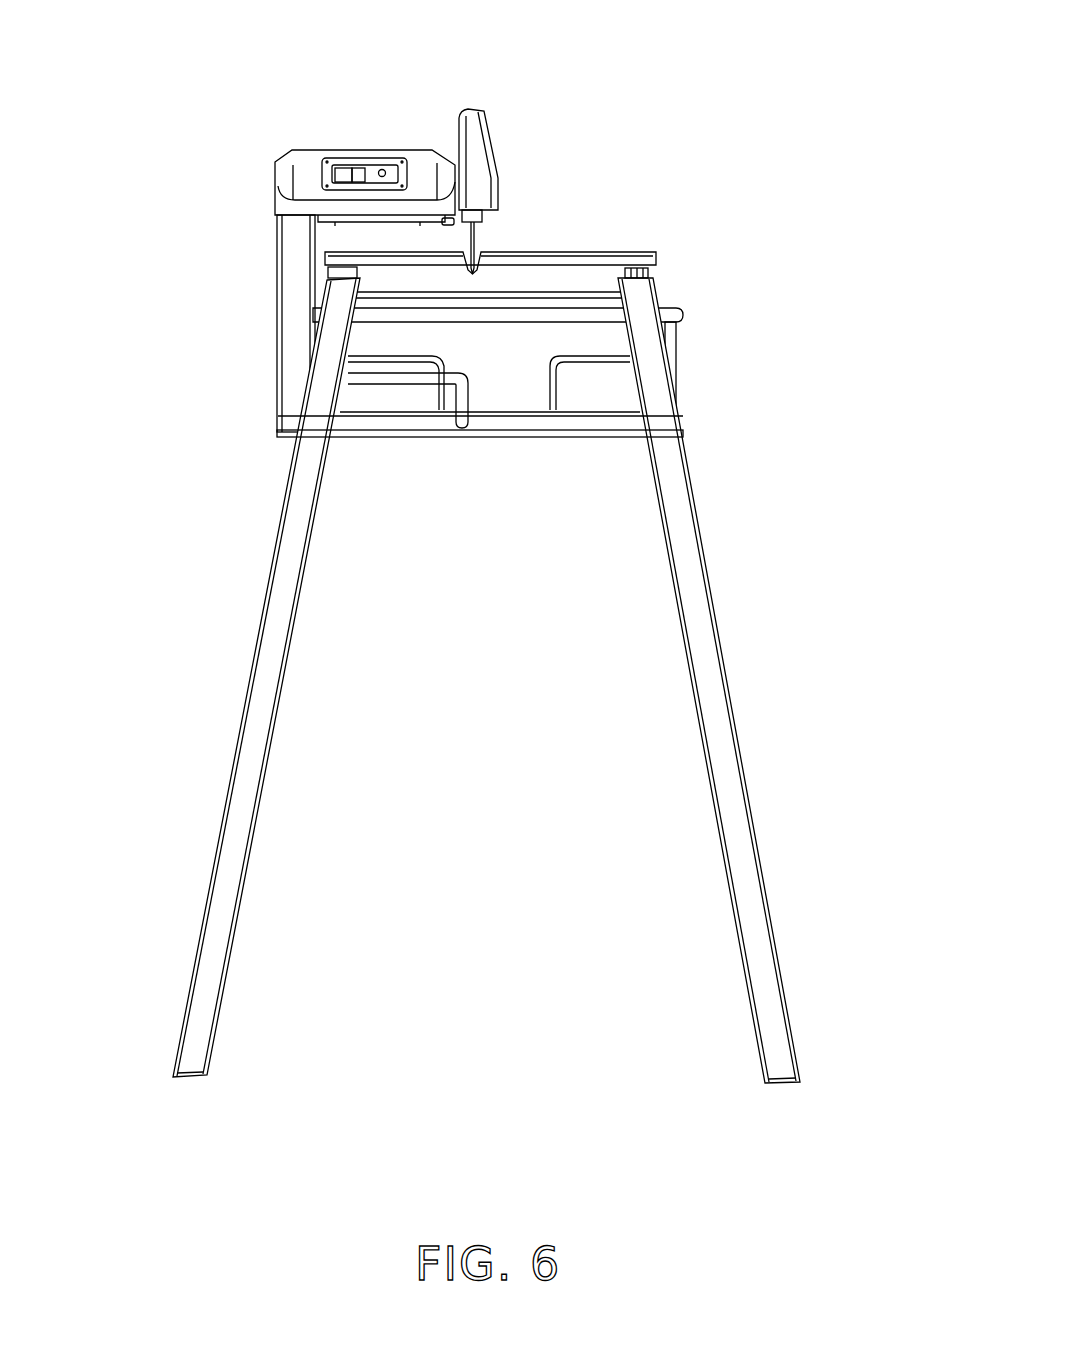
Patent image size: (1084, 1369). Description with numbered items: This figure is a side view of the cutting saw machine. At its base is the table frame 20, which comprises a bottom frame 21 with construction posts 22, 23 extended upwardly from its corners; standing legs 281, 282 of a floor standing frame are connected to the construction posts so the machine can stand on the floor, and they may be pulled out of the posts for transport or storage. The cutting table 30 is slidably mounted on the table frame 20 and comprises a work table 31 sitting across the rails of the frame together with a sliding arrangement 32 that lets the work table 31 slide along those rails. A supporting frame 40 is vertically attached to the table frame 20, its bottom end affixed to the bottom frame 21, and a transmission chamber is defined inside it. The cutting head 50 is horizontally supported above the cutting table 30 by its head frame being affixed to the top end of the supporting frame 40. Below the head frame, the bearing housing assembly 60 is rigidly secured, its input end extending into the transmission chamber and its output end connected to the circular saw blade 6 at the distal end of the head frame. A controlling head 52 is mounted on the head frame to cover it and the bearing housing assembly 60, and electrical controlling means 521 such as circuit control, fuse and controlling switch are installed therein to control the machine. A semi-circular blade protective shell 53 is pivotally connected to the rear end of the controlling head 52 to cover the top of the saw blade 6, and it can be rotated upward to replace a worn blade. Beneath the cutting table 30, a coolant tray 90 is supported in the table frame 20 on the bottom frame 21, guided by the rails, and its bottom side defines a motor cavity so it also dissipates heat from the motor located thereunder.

The circular saw blade 6 is at (484, 232).
The table frame 20 is at (506, 675).
The bottom frame 21 is at (589, 430).
The construction post 22 is at (665, 408).
The construction post 23 is at (316, 410).
The cutting table 30 is at (623, 225).
The work table 31 is at (599, 258).
The sliding arrangement 32 is at (620, 275).
The supporting frame 40 is at (260, 398).
The cutting head 50 is at (339, 186).
The controlling head 52 is at (303, 175).
The blade protective shell 53 is at (473, 153).
The bearing housing assembly 60 is at (376, 218).
The coolant tray 90 is at (700, 350).
The standing leg 281 is at (748, 855).
The standing leg 282 is at (233, 845).
The electrical controlling means 521 is at (378, 163).